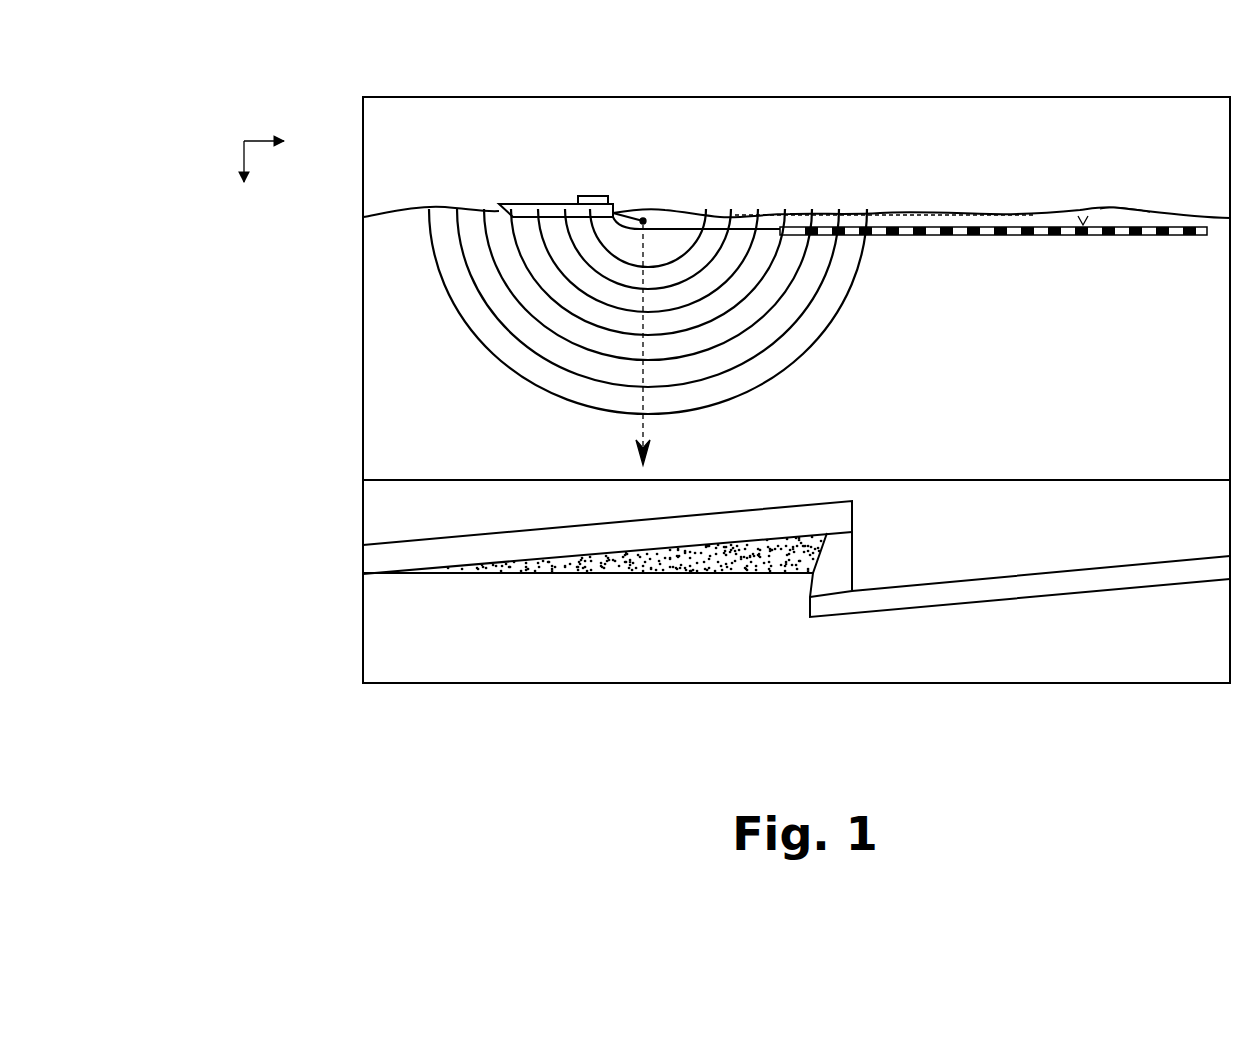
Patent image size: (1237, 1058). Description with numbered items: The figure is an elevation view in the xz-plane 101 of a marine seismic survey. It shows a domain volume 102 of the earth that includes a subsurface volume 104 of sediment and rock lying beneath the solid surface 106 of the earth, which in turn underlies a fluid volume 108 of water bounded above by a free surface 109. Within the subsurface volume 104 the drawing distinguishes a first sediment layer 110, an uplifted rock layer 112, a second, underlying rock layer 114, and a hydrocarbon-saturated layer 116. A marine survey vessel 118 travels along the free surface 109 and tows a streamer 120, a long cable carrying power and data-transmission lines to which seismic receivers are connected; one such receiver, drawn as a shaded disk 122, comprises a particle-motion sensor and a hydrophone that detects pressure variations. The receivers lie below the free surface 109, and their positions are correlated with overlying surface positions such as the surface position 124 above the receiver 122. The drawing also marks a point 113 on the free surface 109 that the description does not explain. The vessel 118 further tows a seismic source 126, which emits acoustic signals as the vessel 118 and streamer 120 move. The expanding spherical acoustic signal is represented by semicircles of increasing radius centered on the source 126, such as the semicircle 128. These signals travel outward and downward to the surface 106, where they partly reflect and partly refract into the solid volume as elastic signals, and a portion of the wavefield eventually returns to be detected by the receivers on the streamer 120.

The xz-plane 101 is at (242, 141).
The domain volume 102 is at (276, 298).
The subsurface volume 104 is at (1060, 533).
The surface 106 is at (425, 479).
The fluid volume 108 is at (383, 372).
The free surface 109 is at (935, 213).
The first sediment layer 110 is at (383, 497).
The uplifted rock layer 112 is at (383, 560).
The wave crest 113 is at (1083, 222).
The second, underlying rock layer 114 is at (500, 668).
The hydrocarbon-saturated layer 116 is at (595, 573).
The marine survey vessel 118 is at (548, 204).
The streamer 120 is at (984, 246).
The seismic receiver 122 is at (1122, 237).
The surface position 124 is at (1124, 210).
The seismic source 126 is at (646, 220).
The semicircle 128 is at (830, 333).